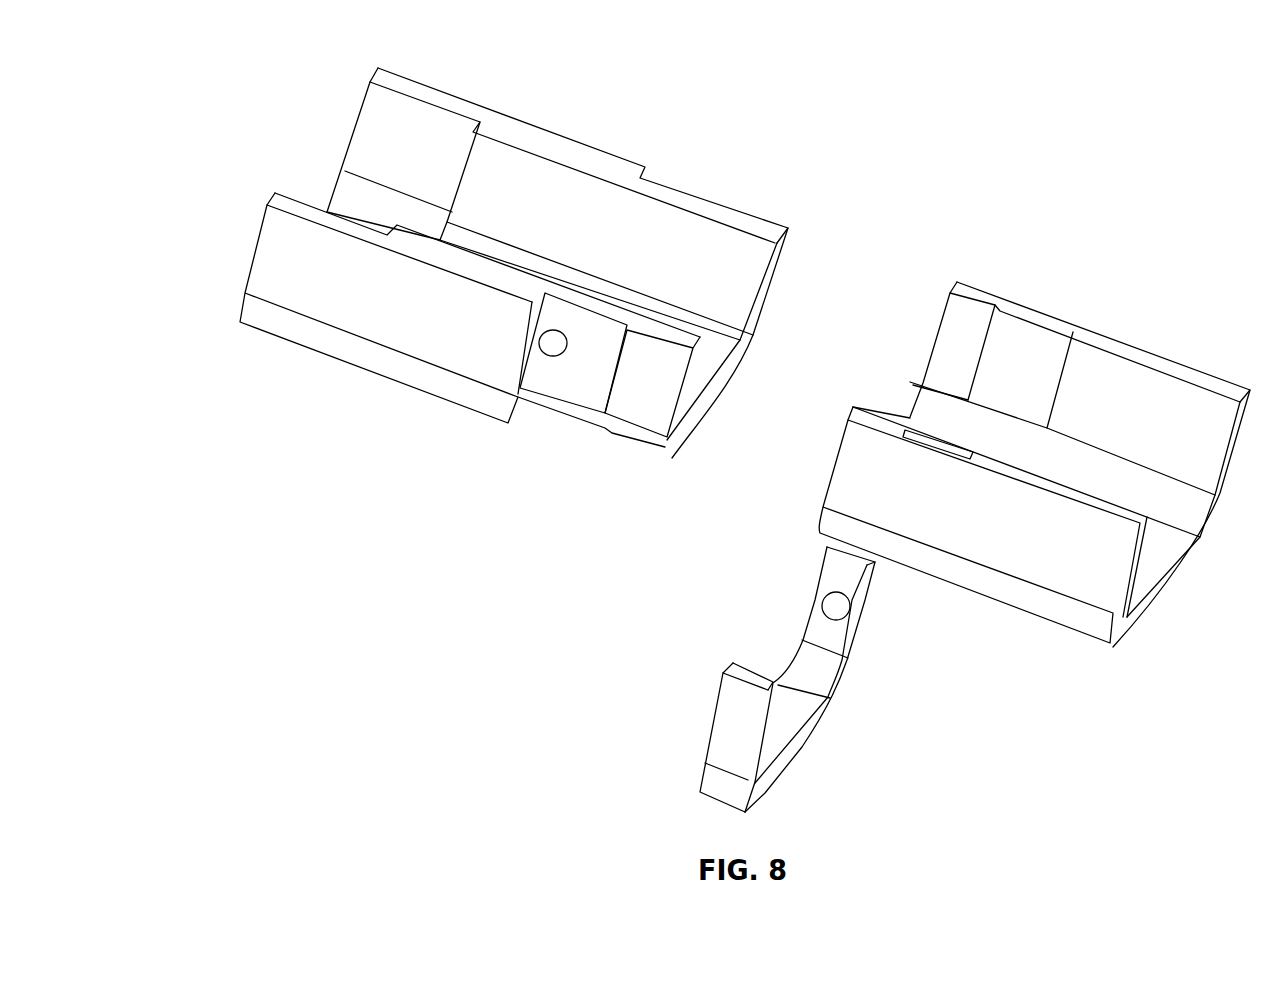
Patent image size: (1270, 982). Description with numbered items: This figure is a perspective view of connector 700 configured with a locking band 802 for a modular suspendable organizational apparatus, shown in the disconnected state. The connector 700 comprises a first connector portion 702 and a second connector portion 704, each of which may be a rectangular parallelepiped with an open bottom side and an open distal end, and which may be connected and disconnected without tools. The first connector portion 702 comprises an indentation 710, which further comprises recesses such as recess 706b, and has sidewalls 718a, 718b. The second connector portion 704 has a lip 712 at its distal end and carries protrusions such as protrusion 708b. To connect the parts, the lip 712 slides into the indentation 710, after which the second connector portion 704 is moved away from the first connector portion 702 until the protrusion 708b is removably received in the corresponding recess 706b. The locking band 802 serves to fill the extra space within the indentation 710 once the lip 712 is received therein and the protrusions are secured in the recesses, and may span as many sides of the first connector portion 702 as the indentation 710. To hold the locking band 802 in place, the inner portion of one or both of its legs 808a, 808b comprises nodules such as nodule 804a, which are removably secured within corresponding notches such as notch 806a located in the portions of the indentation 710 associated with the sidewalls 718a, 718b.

The connector 700 is at (338, 771).
The first connector portion 702 is at (257, 99).
The second connector portion 704 is at (1175, 267).
The recess 706b is at (634, 330).
The protrusion 708b is at (899, 427).
The indentation 710 is at (582, 365).
The lip 712 is at (850, 412).
The sidewall 718a is at (390, 323).
The sidewall 718b is at (535, 147).
The locking band 802 is at (836, 739).
The nodule 804a is at (838, 608).
The notch 806a is at (552, 350).
The leg 808a is at (835, 573).
The leg 808b is at (733, 728).